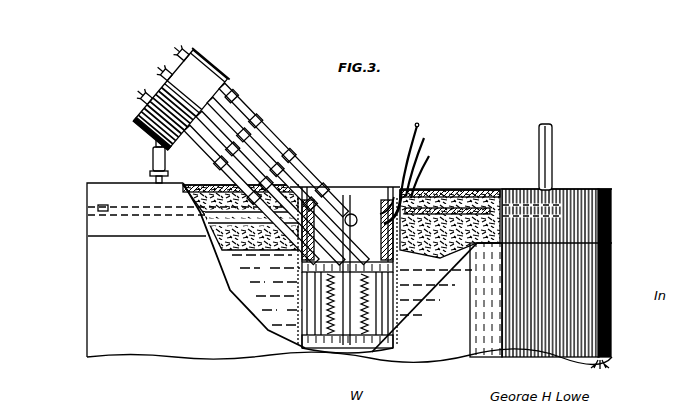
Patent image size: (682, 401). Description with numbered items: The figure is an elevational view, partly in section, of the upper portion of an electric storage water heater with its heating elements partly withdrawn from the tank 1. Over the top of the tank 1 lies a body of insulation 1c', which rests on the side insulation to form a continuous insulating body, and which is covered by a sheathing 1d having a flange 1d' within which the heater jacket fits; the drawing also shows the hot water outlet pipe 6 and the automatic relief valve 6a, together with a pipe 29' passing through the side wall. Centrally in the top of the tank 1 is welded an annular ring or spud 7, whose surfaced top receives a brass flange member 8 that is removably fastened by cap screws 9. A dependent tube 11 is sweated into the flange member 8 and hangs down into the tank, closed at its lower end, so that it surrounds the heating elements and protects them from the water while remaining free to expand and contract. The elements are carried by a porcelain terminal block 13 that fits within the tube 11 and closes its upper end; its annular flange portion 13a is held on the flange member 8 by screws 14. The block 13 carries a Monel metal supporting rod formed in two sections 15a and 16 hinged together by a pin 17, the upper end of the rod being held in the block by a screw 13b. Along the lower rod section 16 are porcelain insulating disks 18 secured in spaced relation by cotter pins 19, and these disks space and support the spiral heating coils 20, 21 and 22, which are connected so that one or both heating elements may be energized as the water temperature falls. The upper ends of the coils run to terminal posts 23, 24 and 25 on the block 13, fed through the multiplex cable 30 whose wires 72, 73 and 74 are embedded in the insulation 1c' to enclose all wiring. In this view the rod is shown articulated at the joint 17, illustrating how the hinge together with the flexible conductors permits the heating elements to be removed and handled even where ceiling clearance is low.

The tank 1 is at (236, 262).
The insulation 1c' is at (240, 201).
The sheathing 1d is at (506, 260).
The flange 1d' is at (329, 274).
The hot water outlet pipe 6 is at (552, 149).
The automatic relief valve 6a is at (151, 158).
The annular ring or spud 7 is at (302, 274).
The flange member 8 is at (386, 209).
The cap screws 9 is at (382, 204).
The dependent tube 11 is at (307, 308).
The porcelain cap member or terminal block 13 is at (218, 74).
The annular flange portion 13a is at (200, 50).
The screw 13b is at (236, 100).
The screws 14 is at (210, 56).
The rod section 15a is at (296, 166).
The rod section 16 is at (346, 350).
The pin 17 is at (353, 213).
The porcelain insulating disks 18 is at (314, 350).
The cotter pins 19 is at (435, 304).
The heating coil 20 is at (302, 330).
The heating coil 21 is at (397, 312).
The heating coil 22 is at (397, 298).
The terminal post 23 is at (140, 97).
The terminal post 24 is at (160, 68).
The terminal post 25 is at (178, 50).
The pipe 29' is at (161, 198).
The multiplex cable 30 is at (470, 190).
The wire 72 is at (418, 134).
The wire 73 is at (422, 178).
The wire 74 is at (420, 158).